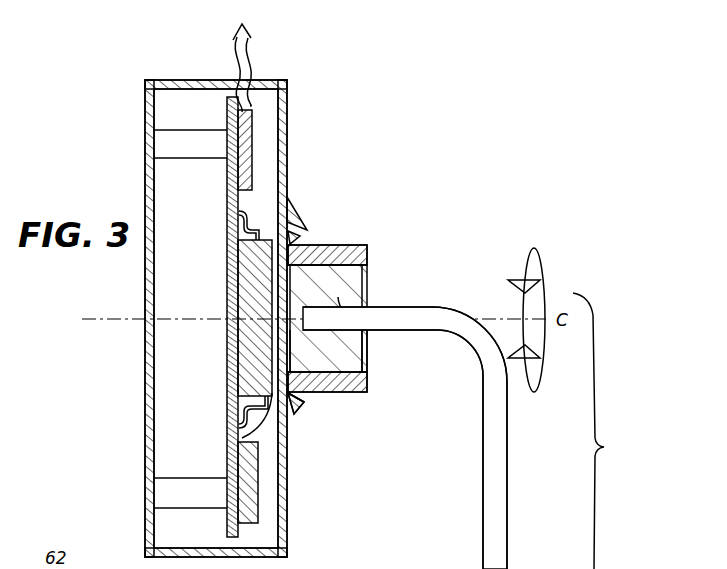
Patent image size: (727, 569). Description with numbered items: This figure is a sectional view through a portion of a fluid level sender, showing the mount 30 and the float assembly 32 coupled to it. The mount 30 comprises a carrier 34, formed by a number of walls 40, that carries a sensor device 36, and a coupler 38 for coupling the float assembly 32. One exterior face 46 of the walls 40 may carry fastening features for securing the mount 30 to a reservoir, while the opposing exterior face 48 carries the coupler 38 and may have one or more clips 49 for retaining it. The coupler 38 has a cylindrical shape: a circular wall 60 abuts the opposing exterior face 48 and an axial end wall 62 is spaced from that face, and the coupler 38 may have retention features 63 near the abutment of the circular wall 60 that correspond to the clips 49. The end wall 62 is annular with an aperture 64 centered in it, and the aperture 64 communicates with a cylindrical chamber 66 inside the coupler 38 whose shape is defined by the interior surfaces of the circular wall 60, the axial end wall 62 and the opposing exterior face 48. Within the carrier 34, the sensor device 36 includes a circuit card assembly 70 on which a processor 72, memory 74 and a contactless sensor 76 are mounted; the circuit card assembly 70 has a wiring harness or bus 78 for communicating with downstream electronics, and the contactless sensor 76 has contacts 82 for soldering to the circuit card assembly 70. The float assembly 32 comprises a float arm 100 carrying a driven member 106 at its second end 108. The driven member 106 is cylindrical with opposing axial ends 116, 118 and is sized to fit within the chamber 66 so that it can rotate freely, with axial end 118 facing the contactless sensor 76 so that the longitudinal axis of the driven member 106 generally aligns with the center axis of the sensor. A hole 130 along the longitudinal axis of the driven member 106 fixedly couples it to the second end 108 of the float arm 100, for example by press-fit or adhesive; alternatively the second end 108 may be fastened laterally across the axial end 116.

The mount 30 is at (288, 79).
The float assembly 32 is at (603, 431).
The carrier 34 is at (172, 80).
The sensor device 36 is at (232, 283).
The coupler 38 is at (334, 248).
The walls 40 is at (284, 552).
The exterior face 46 is at (145, 150).
The opposing exterior face 48 is at (289, 150).
The clips 49 is at (296, 405).
The circular wall 60 is at (305, 396).
The axial end wall 62 is at (365, 382).
The retention features 63 is at (300, 396).
The aperture 64 is at (372, 350).
The cylindrical chamber 66 is at (362, 262).
The circuit card assembly 70 is at (233, 199).
The processor 72 is at (255, 140).
The memory 74 is at (258, 492).
The contactless sensor 76 is at (238, 437).
The wiring harness or bus 78 is at (251, 46).
The contacts 82 is at (247, 233).
The float arm 100 is at (507, 502).
The driven member 106 is at (405, 318).
The second end 108 is at (405, 304).
The axial end 116 is at (370, 333).
The axial end 118 is at (290, 338).
The hole 130 is at (365, 308).